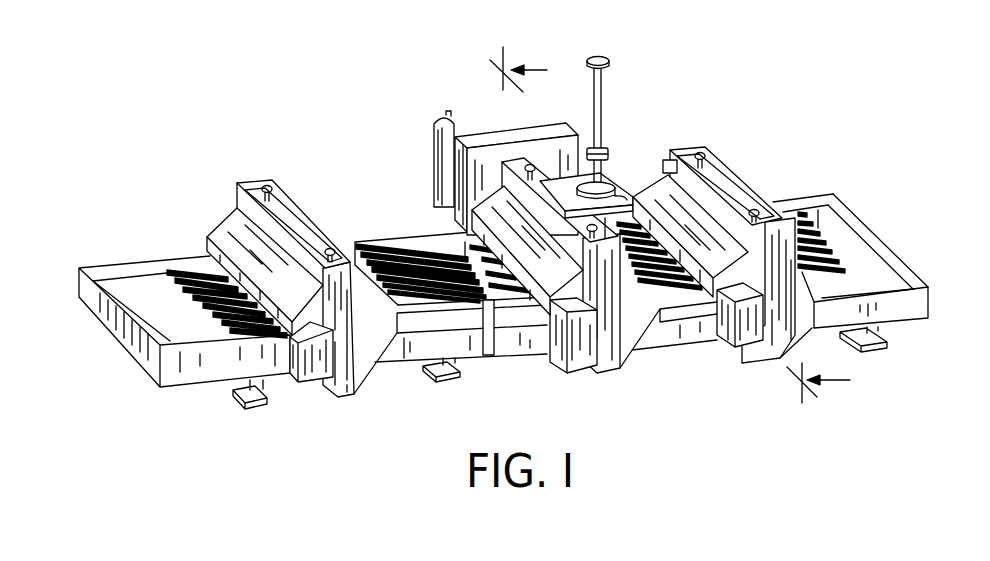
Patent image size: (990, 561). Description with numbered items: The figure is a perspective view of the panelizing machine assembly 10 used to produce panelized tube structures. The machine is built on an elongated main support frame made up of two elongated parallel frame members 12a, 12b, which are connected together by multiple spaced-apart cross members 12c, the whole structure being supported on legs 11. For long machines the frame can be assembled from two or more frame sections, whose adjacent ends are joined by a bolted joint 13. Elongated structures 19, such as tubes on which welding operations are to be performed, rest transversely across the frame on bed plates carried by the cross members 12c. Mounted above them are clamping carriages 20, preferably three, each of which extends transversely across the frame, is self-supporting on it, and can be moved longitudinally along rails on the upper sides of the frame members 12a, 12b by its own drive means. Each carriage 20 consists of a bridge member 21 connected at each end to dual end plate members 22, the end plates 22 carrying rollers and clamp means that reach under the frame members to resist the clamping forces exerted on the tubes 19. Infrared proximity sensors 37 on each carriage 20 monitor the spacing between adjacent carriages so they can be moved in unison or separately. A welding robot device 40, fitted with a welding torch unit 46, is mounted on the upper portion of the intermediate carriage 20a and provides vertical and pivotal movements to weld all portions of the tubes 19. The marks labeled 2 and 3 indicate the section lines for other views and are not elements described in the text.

The panelizing machine assembly 10 is at (515, 241).
The legs 11 is at (265, 382).
The elongated parallel frame member 12a is at (905, 315).
The elongated parallel frame member 12b is at (810, 193).
The cross members 12c is at (123, 327).
The bolted joint 13 is at (503, 353).
The elongated structures (tubes) 19 is at (393, 237).
The ribbon cable 2 is at (476, 269).
The clamping carriages 20 is at (278, 181).
The intermediate carriage 20a is at (517, 183).
The bridge member 21 is at (270, 230).
The end plate members 22 is at (367, 358).
The infrared proximity sensors 37 is at (665, 160).
The welding robot device 40 is at (603, 150).
The welding torch unit 46 is at (493, 128).
The section line 3- 3 is at (838, 85).